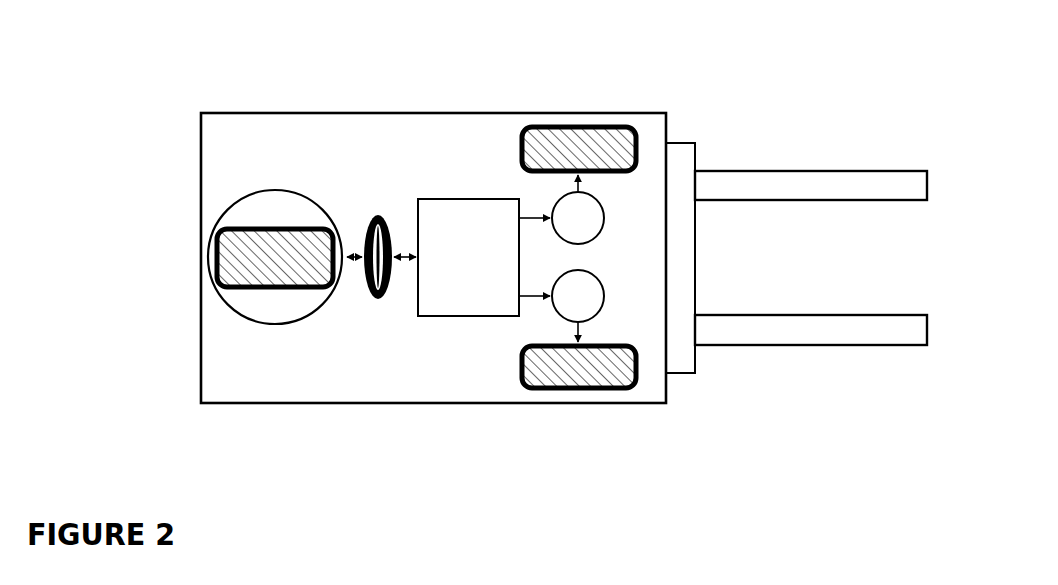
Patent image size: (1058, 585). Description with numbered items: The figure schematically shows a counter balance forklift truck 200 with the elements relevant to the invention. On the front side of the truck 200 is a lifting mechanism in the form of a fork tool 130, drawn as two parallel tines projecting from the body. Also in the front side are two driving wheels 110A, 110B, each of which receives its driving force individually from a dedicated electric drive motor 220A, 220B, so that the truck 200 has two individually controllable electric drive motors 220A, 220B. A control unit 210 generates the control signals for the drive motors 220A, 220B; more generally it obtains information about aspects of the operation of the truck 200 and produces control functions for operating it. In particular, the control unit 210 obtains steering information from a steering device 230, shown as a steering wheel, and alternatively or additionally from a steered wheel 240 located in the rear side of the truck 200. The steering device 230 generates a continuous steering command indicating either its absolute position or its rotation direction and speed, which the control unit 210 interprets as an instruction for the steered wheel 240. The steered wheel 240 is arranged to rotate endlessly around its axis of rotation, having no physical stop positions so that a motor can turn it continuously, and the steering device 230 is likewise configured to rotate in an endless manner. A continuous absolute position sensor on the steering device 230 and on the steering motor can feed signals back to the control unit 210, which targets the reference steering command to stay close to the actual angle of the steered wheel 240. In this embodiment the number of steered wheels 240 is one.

The counter balance forklift truck 200 is at (168, 80).
The driving wheel 110A is at (600, 132).
The driving wheel 110B is at (600, 386).
The fork tool 130 is at (802, 167).
The control unit 210 is at (447, 198).
The electric drive motor 220A is at (618, 196).
The electric drive motor 220B is at (618, 274).
The steering device 230 is at (376, 215).
The steered wheel 240 is at (223, 277).